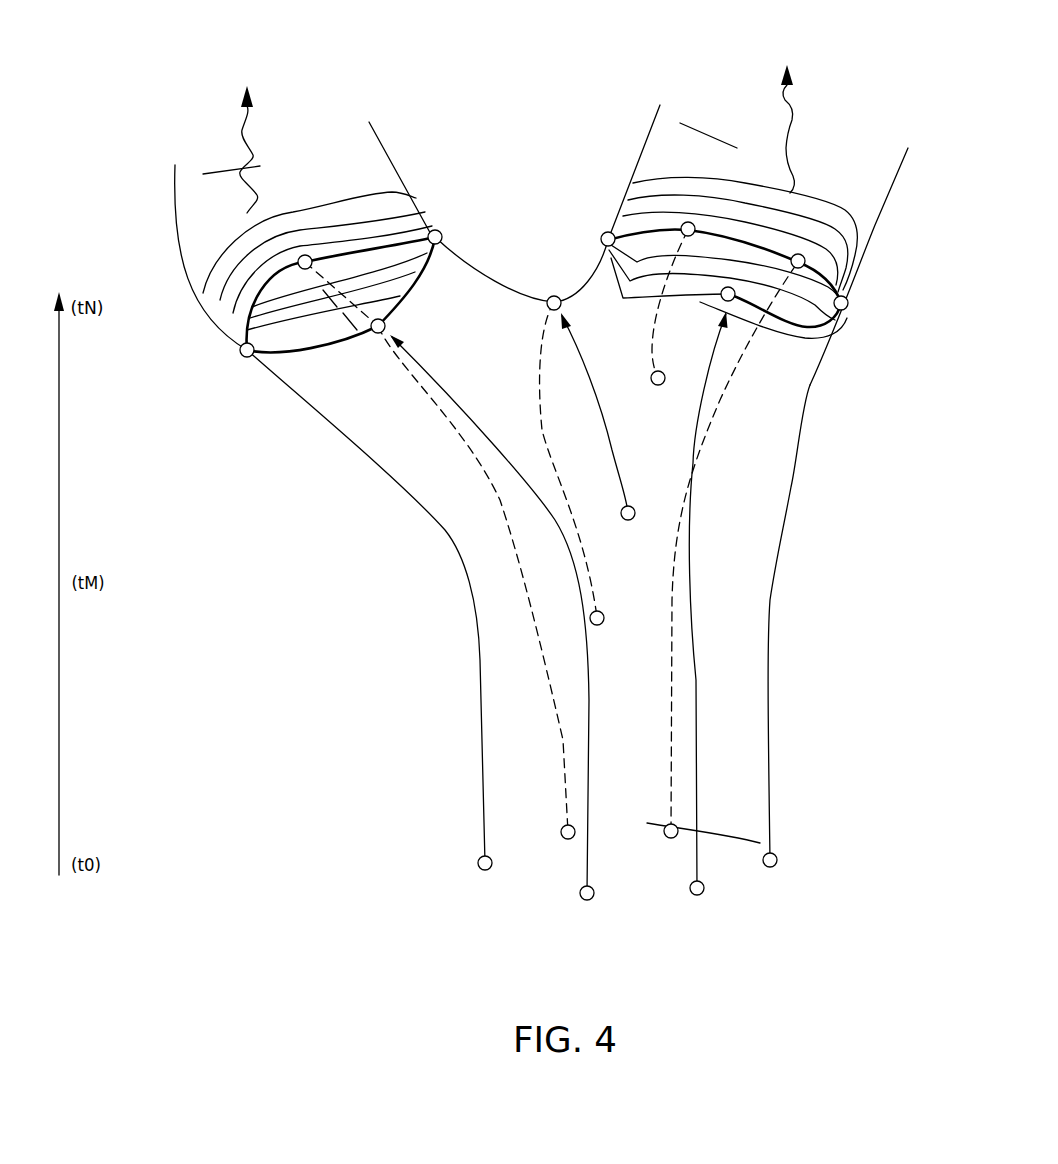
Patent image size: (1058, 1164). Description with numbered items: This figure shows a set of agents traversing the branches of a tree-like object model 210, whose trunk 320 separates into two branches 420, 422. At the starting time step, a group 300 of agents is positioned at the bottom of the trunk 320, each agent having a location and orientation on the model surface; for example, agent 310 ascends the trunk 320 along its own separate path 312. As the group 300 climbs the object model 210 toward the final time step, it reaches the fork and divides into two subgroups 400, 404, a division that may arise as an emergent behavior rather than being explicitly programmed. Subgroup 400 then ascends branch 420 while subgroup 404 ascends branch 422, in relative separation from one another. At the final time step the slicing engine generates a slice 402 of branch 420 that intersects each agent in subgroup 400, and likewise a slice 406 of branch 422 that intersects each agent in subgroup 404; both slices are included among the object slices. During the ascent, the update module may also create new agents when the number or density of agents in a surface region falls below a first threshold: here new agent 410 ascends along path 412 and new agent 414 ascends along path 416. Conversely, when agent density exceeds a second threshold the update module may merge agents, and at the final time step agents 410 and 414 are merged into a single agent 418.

The object model 210 is at (531, 100).
The group of agents 300 is at (426, 801).
The agent 310 is at (376, 333).
The path 312 is at (590, 693).
The trunk 320 is at (870, 872).
The subgroup 400 is at (319, 322).
The slice 402 is at (432, 290).
The subgroup 404 is at (905, 252).
The slice 406 is at (780, 347).
The new agent 410 is at (628, 520).
The path 412 is at (610, 427).
The new agent 414 is at (597, 625).
The path 416 is at (539, 366).
The agent 418 is at (553, 296).
The branch 420 is at (170, 127).
The branch 422 is at (869, 117).